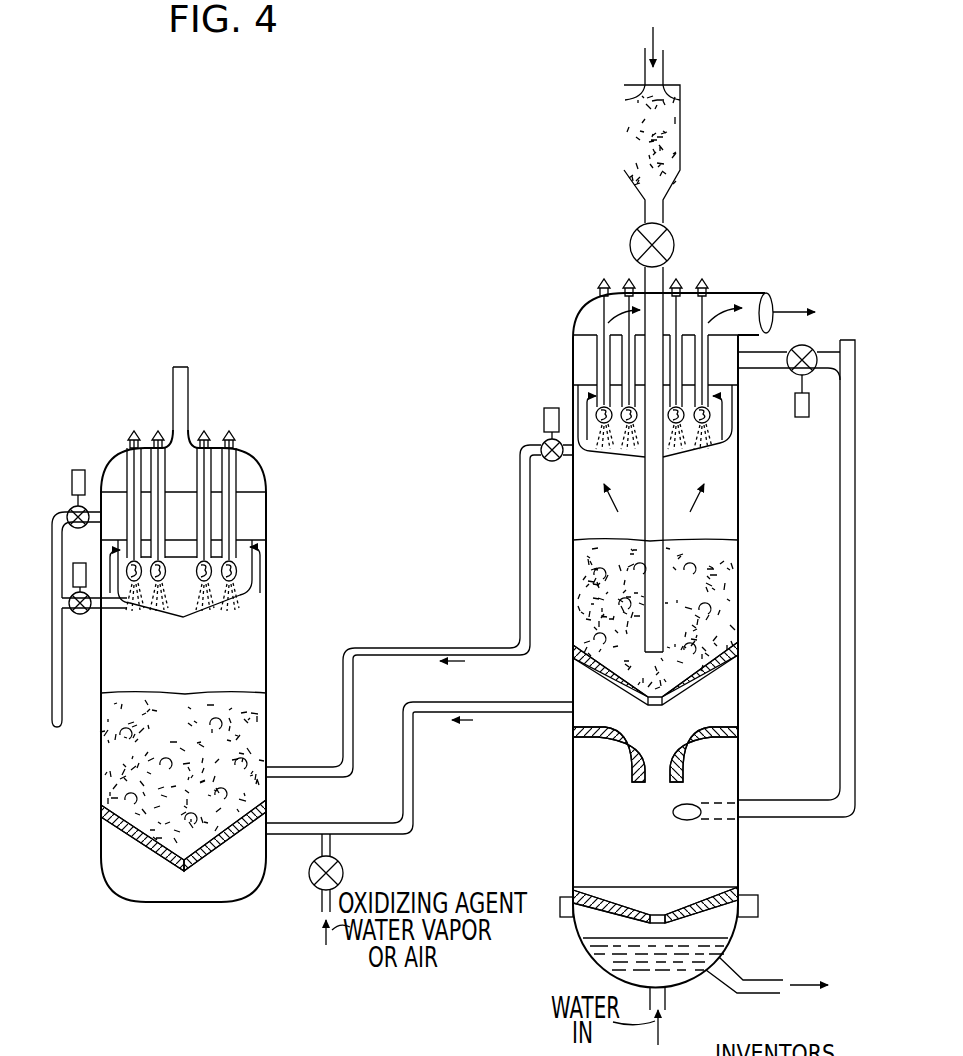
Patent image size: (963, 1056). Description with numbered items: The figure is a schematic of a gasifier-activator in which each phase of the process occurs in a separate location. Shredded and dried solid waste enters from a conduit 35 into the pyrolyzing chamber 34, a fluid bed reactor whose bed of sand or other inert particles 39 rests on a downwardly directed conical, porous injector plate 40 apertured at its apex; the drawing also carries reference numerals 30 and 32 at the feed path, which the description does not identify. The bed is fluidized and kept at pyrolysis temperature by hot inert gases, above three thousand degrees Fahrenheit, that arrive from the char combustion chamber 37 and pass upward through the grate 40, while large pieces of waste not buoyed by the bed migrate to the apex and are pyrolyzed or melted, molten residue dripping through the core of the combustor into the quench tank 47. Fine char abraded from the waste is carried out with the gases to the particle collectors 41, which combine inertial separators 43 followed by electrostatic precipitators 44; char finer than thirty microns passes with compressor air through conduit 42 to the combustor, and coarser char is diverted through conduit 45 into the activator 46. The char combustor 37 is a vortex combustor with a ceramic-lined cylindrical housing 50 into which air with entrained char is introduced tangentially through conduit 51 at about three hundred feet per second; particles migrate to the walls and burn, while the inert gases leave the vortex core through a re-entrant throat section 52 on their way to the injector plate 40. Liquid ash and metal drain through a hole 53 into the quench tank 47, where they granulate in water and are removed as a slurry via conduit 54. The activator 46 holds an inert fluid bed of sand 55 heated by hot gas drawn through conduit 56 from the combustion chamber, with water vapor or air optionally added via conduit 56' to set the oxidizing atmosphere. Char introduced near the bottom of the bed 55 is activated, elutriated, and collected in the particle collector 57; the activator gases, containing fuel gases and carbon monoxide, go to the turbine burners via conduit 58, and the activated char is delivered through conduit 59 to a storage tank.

The solid feed inlet conduit 30 is at (663, 62).
The feed valve 32 is at (668, 247).
The pyrolyzing chamber 34 is at (563, 551).
The conduit 35 is at (652, 480).
The char combustion chamber 37 is at (609, 837).
The fluid bed of inert particles 39 is at (730, 597).
The conical injector plate 40 is at (715, 676).
The particle collectors 41 is at (561, 373).
The conduit 42 is at (838, 547).
The inertial separators 43 is at (716, 425).
The electrostatic precipitators 44 is at (600, 351).
The conduit 45 is at (463, 646).
The activator 46 is at (300, 613).
The quench tank 47 is at (740, 928).
The cylindrical housing 50 is at (745, 765).
The conduit 51 is at (735, 828).
The re-entrant throat section 52 is at (661, 739).
The hole 53 is at (653, 913).
The conduit 54 is at (778, 995).
The inert fluid bed 55 is at (120, 765).
The conduit 56 is at (420, 768).
The conduit 56' is at (351, 889).
The particle collector 57 is at (272, 522).
The conduit 58 is at (190, 375).
The conduit 59 is at (51, 649).